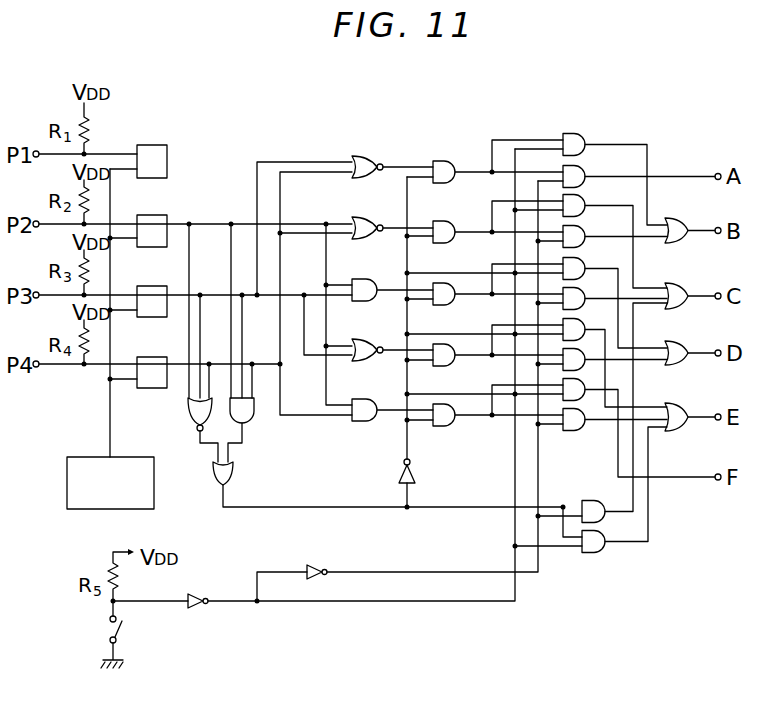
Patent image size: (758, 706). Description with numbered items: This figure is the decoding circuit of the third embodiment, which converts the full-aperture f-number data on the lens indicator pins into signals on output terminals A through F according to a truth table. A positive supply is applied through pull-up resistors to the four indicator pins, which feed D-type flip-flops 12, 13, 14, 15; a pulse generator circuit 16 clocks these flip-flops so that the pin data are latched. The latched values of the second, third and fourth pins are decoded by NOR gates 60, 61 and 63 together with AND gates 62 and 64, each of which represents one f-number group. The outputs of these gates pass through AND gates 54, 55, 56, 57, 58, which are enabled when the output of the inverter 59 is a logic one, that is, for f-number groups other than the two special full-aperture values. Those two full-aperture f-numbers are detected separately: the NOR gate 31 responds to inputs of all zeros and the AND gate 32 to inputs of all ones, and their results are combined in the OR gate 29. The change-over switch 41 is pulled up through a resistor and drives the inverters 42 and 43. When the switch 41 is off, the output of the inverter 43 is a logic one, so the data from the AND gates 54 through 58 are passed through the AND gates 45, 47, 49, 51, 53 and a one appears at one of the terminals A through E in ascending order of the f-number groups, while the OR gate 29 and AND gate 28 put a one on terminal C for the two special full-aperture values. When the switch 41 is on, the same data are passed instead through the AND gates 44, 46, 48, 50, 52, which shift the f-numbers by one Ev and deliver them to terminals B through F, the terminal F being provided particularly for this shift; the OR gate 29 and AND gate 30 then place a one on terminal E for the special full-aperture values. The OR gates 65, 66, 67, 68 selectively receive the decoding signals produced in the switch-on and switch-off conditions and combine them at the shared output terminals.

The D-type flip-flop 12 is at (168, 150).
The D-type flip-flop 13 is at (152, 215).
The D-type flip-flop 14 is at (150, 286).
The D-type flip-flop 15 is at (148, 357).
The pulse generator circuit 16 is at (154, 460).
The AND gate 28 is at (590, 500).
The OR gate 29 is at (233, 476).
The AND gate 30 is at (595, 555).
The NOR gate 31 is at (188, 402).
The AND gate 32 is at (254, 410).
The change-over switch 41 is at (122, 619).
The inverter 42 is at (192, 598).
The inverter 43 is at (313, 563).
The AND gate 44 is at (576, 134).
The AND gate 45 is at (587, 166).
The AND gate 46 is at (587, 197).
The AND gate 47 is at (587, 228).
The AND gate 48 is at (587, 258).
The AND gate 49 is at (582, 292).
The AND gate 50 is at (582, 322).
The AND gate 51 is at (585, 347).
The AND gate 52 is at (586, 379).
The AND gate 53 is at (568, 430).
The AND gate 54 is at (445, 160).
The AND gate 55 is at (440, 222).
The AND gate 56 is at (440, 283).
The AND gate 57 is at (438, 345).
The AND gate 58 is at (440, 405).
The inverter 59 is at (418, 468).
The NOR gate 60 is at (362, 157).
The NOR gate 61 is at (361, 218).
The AND gate 62 is at (360, 278).
The NOR gate 63 is at (360, 339).
The AND gate 64 is at (358, 399).
The OR gate 65 is at (696, 210).
The OR gate 66 is at (696, 271).
The OR gate 67 is at (680, 340).
The OR gate 68 is at (672, 403).